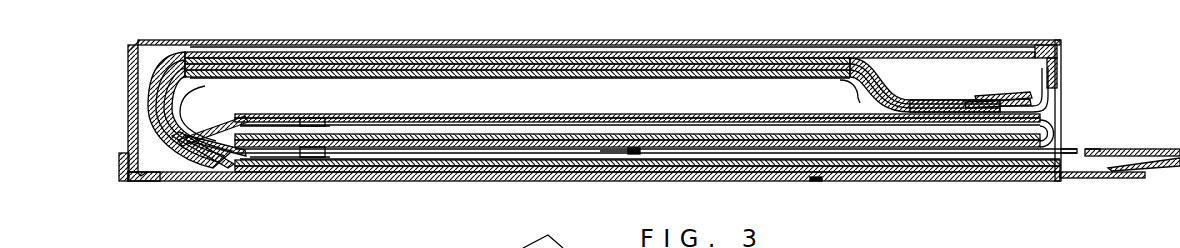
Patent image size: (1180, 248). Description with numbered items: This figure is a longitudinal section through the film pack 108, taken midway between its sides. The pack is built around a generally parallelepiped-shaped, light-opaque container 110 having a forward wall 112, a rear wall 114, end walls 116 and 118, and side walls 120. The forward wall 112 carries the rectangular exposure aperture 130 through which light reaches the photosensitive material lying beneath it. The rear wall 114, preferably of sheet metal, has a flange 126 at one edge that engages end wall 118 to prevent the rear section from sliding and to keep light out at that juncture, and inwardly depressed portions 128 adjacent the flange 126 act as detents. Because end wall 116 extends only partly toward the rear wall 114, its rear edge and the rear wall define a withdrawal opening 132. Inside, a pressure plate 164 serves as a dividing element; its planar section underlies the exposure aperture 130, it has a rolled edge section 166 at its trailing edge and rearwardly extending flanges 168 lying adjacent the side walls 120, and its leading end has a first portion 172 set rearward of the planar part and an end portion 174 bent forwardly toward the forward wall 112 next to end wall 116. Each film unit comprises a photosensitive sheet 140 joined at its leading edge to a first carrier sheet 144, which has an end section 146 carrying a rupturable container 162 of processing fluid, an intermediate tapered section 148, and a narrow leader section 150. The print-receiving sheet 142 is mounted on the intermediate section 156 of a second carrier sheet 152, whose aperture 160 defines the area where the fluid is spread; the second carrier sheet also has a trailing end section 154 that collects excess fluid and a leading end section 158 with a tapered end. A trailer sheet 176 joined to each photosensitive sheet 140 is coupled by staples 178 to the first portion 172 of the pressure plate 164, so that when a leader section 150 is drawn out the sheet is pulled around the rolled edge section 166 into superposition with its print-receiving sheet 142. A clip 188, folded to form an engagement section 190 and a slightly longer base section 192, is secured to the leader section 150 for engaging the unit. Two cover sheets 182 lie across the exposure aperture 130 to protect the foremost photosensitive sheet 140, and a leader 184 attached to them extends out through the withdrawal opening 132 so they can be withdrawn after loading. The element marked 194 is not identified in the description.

The film pack 108 is at (185, 30).
The container 110 is at (918, 41).
The forward wall 112 is at (908, 40).
The rear wall 114 is at (668, 182).
The end wall 116 is at (1055, 75).
The end wall 118 is at (133, 76).
The side walls 120 is at (152, 181).
The flange 126 is at (122, 166).
The inwardly depressed portions 128 is at (140, 180).
The exposure aperture 130 is at (215, 44).
The withdrawal opening 132 is at (1047, 138).
The photosensitive sheet 140 is at (478, 62).
The print-receiving sheet 142 is at (420, 150).
The first carrier sheet 144 is at (449, 115).
The end section 146 is at (201, 128).
The intermediate tapered section 148 is at (490, 116).
The leader section 150 is at (617, 148).
The second carrier sheet 152 is at (630, 152).
The trailing end section 154 is at (213, 166).
The intermediate section 156 is at (240, 126).
The leading end section 158 is at (712, 126).
The aperture 160 is at (388, 165).
The rupturable container 162 is at (320, 120).
The pressure plate 164 is at (532, 78).
The rolled edge section 166 is at (176, 98).
The flanges 168 is at (405, 102).
The first portion 172 is at (856, 100).
The end portion 174 is at (916, 104).
The trailer sheet 176 is at (1052, 92).
The staples 178 is at (993, 92).
The cover sheets 182 is at (445, 50).
The leader 184 is at (1078, 180).
The clip 188 is at (1060, 118).
The engagement section 190 is at (1145, 172).
The base section 192 is at (1112, 153).
The stop 194 is at (818, 181).